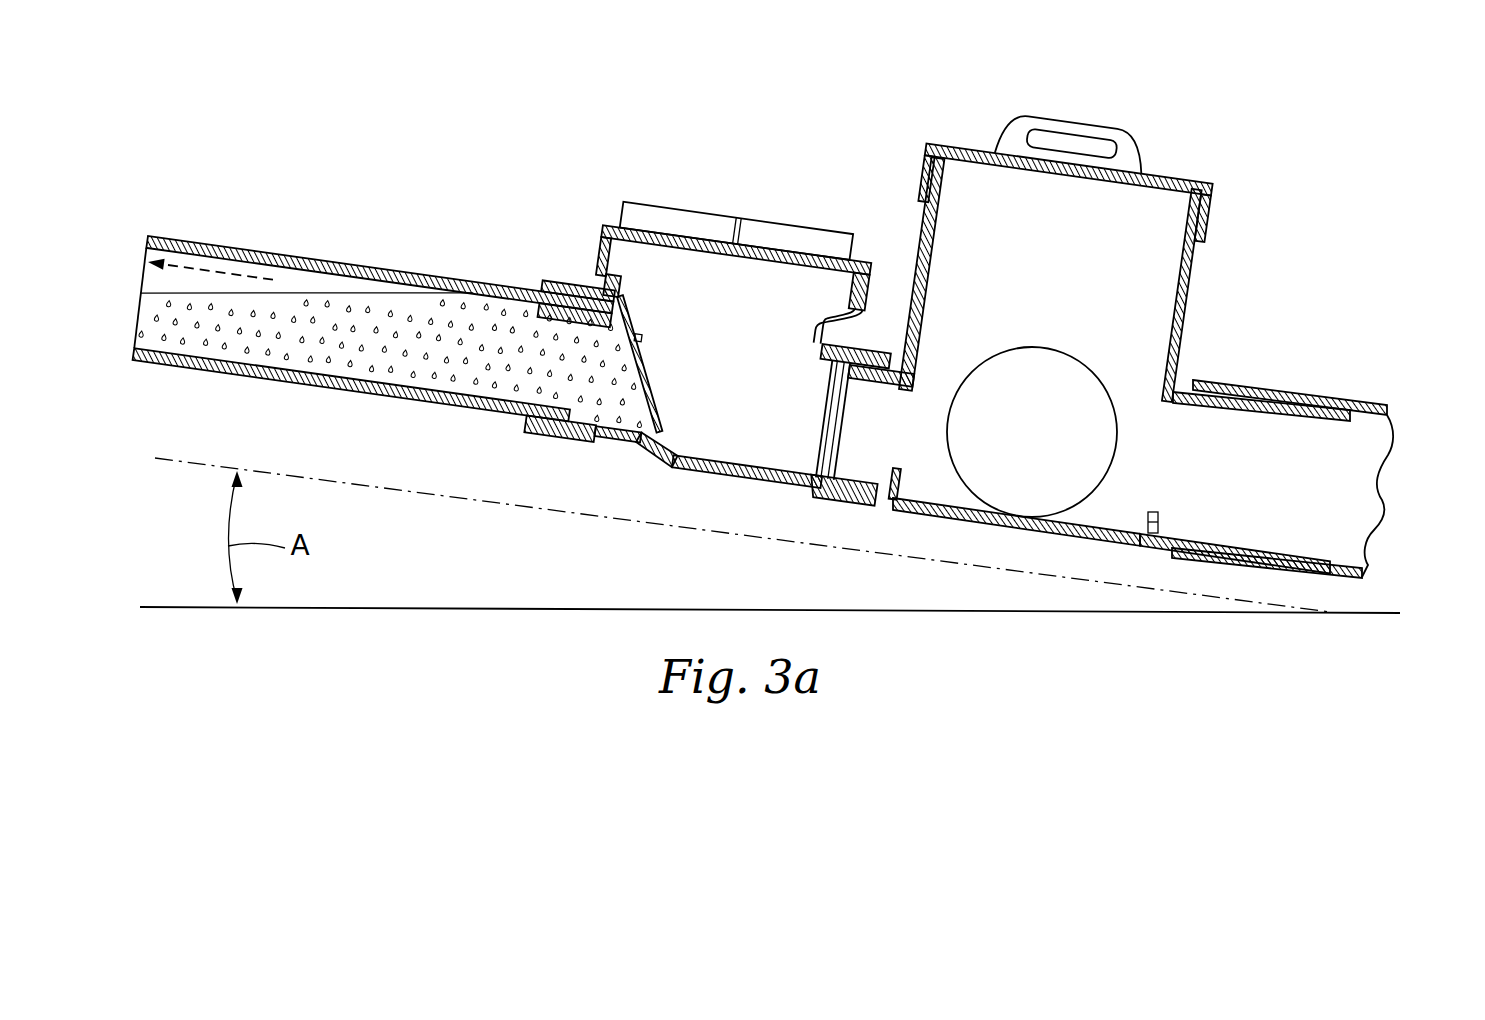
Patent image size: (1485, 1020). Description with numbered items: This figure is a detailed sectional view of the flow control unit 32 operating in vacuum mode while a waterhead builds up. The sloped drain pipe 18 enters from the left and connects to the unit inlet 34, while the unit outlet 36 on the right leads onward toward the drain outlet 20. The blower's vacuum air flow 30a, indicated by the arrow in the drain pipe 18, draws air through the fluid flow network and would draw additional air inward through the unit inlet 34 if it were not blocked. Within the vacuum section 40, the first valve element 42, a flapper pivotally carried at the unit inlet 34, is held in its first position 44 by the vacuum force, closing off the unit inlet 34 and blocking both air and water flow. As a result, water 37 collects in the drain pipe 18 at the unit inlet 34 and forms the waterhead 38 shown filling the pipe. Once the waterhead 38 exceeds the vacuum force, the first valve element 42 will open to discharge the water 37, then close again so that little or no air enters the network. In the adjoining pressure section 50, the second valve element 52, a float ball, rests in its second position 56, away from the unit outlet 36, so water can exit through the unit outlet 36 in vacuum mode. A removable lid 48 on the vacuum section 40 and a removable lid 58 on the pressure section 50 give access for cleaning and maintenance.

The drain pipe 18 is at (247, 247).
The drain outlet 20 is at (1378, 523).
The vacuum air flow 30a is at (182, 262).
The flow control unit 32 is at (892, 162).
The unit inlet 34 is at (577, 281).
The unit outlet 36 is at (1187, 383).
The water 37 is at (420, 345).
The waterhead 38 is at (486, 322).
The vacuum section 40 is at (732, 496).
The first valve element 42 is at (643, 363).
The first position 44 is at (670, 416).
The removable lid 48 is at (710, 213).
The pressure section 50 is at (1047, 535).
The second valve element 52 is at (1032, 358).
The second position 56 is at (1098, 366).
The removable lid 58 is at (1177, 182).